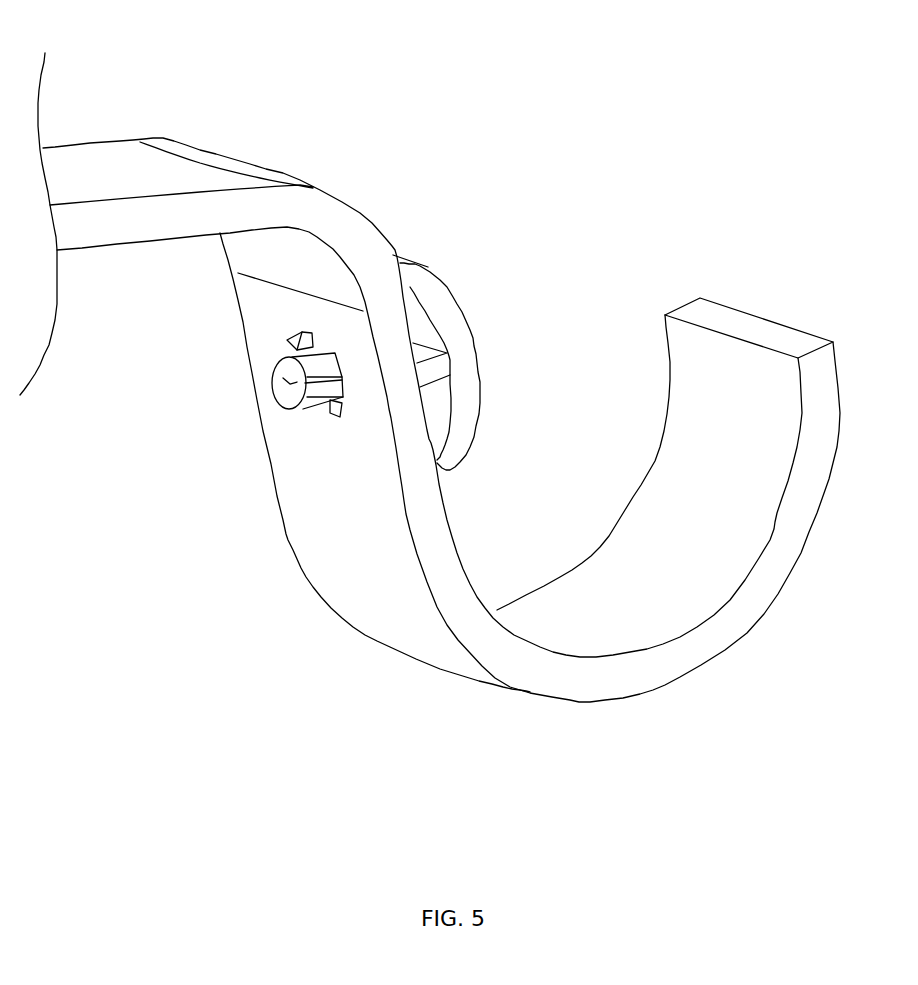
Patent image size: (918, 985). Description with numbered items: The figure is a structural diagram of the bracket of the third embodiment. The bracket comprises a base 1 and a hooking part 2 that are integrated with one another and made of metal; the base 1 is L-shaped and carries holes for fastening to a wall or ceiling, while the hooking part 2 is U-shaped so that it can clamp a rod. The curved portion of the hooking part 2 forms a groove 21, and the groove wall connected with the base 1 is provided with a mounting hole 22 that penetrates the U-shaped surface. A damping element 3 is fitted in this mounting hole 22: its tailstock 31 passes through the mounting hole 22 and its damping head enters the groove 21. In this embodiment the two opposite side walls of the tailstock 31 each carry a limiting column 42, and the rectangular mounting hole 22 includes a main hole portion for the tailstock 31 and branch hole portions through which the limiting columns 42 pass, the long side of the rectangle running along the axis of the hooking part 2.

The base 1 is at (122, 172).
The hooking part 2 is at (408, 640).
The damping element 3 is at (457, 286).
The groove 21 is at (603, 350).
The mounting hole 22 is at (337, 415).
The tailstock 31 is at (273, 372).
The limiting column 42 is at (287, 340).